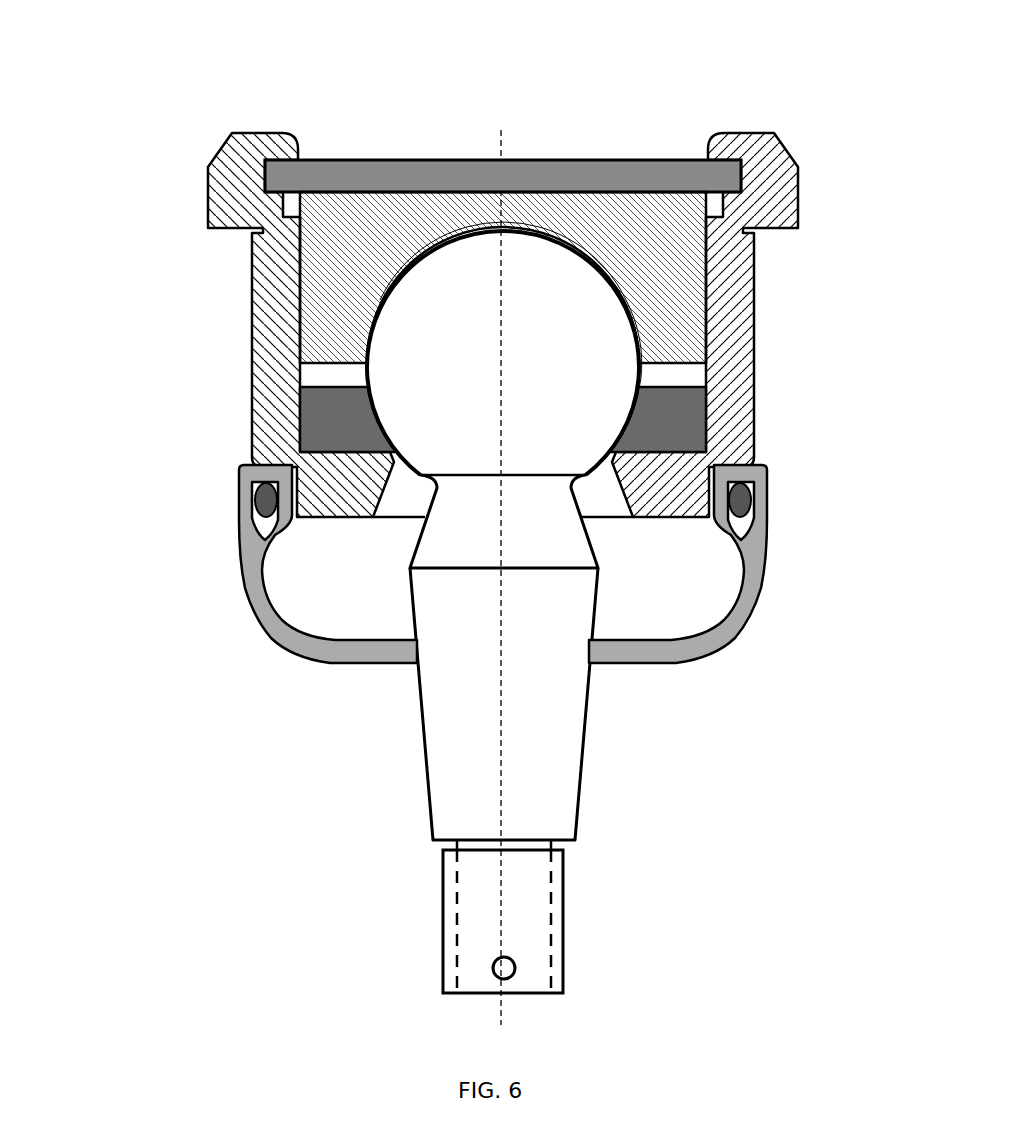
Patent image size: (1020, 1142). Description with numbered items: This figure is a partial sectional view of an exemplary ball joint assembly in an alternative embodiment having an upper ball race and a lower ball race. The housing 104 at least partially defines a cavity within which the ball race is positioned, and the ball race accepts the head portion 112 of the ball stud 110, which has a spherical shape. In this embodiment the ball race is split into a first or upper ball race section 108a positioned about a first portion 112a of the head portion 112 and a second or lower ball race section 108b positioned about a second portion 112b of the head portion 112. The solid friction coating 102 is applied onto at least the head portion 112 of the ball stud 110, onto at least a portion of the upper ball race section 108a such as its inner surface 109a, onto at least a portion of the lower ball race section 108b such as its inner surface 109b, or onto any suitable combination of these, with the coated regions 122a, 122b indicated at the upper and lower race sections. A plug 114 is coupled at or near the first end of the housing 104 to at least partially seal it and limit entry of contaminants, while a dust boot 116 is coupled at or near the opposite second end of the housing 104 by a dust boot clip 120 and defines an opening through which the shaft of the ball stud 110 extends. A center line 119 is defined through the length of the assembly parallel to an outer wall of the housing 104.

The solid friction coating 102 is at (637, 322).
The housing 104 is at (280, 246).
The upper ball race section 108a is at (330, 308).
The lower ball race section 108b is at (327, 428).
The inner surface of the upper ball race section 109a is at (403, 272).
The inner surface of the lower ball race section 109b is at (363, 402).
The ball stud 110 is at (462, 643).
The head portion 112 is at (566, 435).
The first portion of the head portion 112a is at (622, 243).
The second portion of the head portion 112b is at (663, 442).
The plug 114 is at (683, 178).
The dust boot 116 is at (247, 610).
The center line 119 is at (500, 823).
The dust boot clip 120 is at (255, 500).
The first contact region 122a is at (548, 232).
The second contact region 122b is at (380, 423).